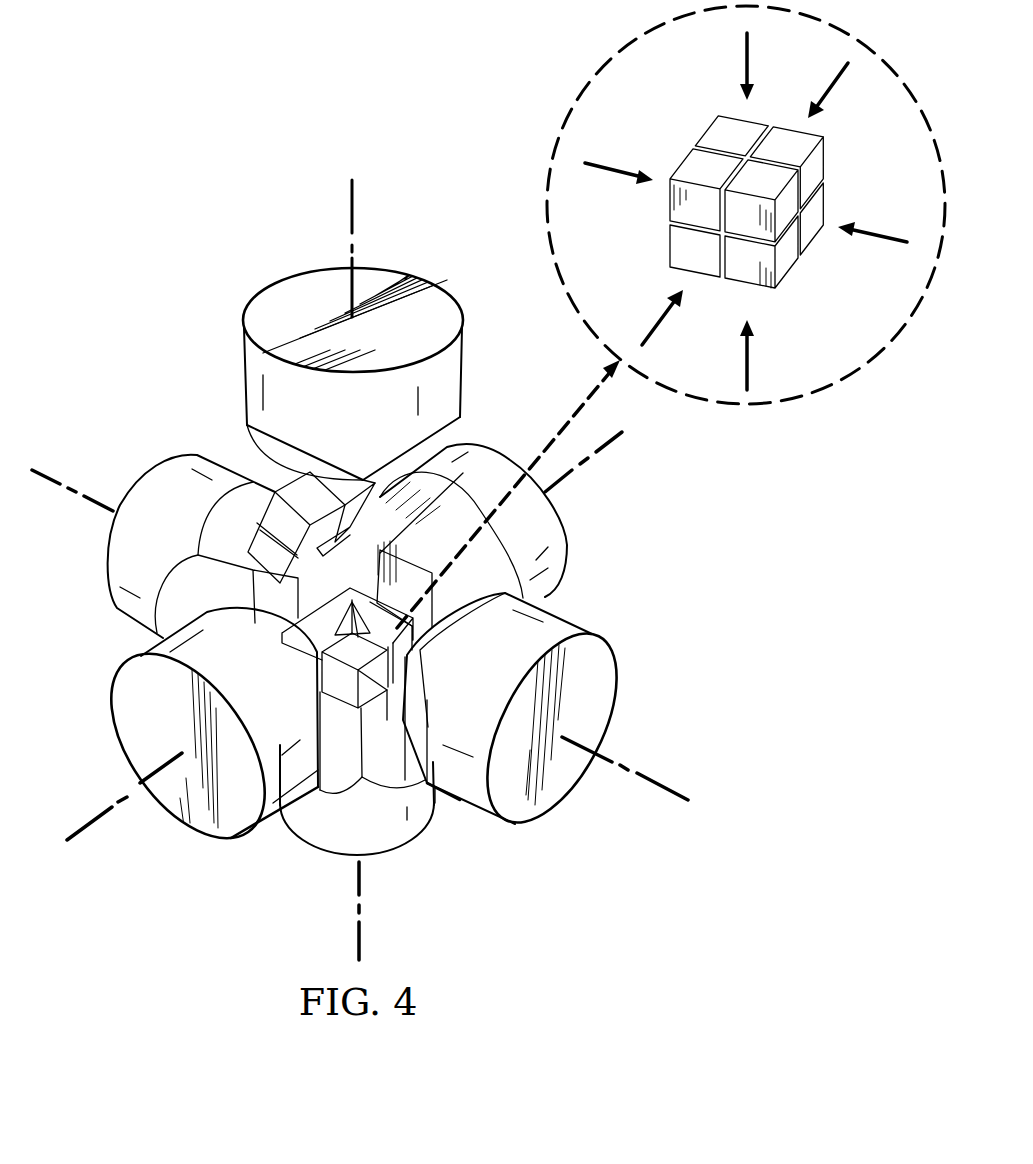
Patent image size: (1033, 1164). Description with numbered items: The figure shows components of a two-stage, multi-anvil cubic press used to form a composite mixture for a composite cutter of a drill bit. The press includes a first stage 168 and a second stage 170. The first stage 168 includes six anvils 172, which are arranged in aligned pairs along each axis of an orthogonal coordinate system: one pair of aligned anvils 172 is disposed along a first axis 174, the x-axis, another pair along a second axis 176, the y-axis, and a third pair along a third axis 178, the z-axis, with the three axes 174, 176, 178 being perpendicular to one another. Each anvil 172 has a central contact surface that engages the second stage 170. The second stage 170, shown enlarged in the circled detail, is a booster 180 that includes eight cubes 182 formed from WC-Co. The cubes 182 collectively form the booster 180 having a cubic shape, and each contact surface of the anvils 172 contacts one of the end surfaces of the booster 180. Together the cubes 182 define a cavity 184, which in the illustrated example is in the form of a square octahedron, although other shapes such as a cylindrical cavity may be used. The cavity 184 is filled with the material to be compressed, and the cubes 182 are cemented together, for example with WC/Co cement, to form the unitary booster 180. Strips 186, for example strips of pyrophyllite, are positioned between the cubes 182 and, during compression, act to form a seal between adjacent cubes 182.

The first stage 168 is at (124, 206).
The second stage 170 is at (848, 174).
The anvils 172 is at (297, 283).
The first axis 174 is at (93, 814).
The second axis 176 is at (670, 784).
The third axis 178 is at (350, 198).
The booster 180 is at (785, 273).
The cubes 182 is at (787, 140).
The cavity 184 is at (330, 672).
The strips 186 is at (713, 143).